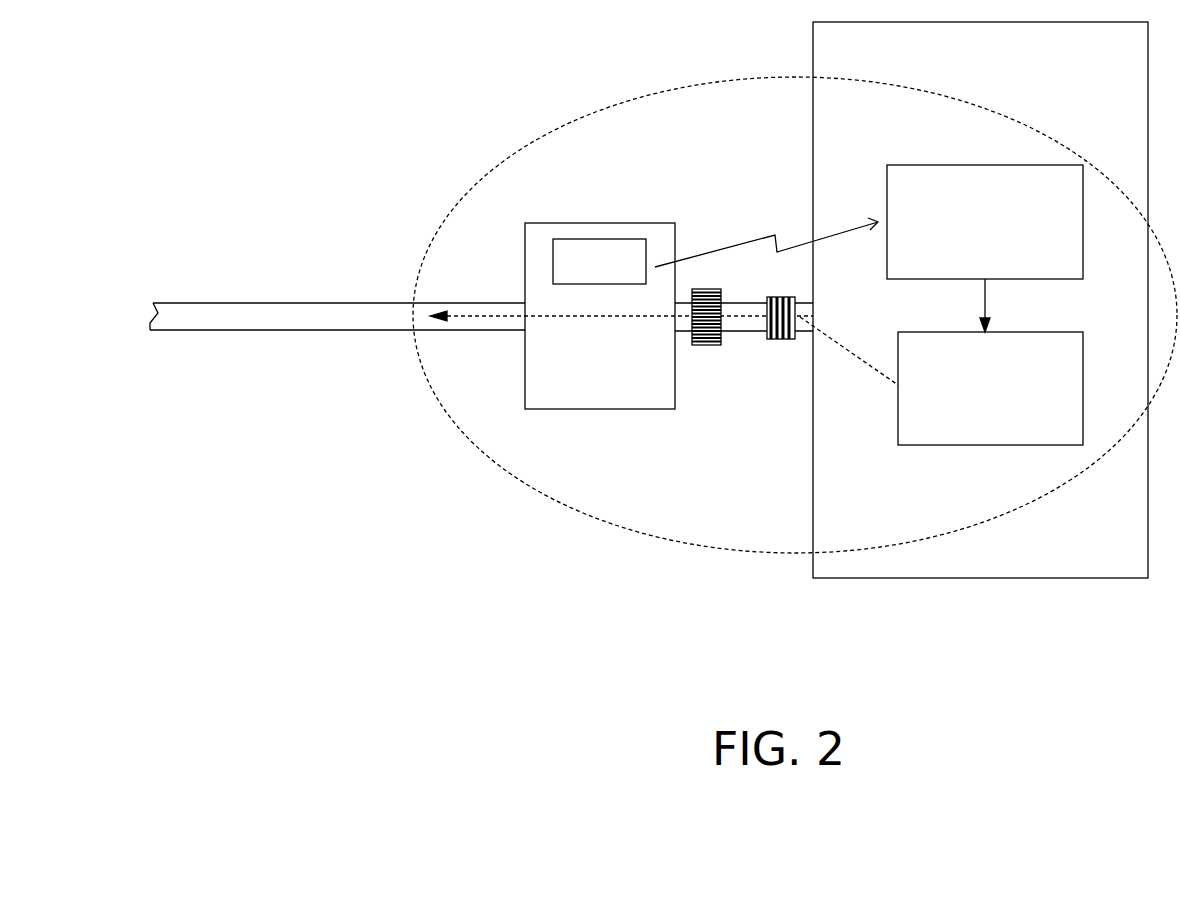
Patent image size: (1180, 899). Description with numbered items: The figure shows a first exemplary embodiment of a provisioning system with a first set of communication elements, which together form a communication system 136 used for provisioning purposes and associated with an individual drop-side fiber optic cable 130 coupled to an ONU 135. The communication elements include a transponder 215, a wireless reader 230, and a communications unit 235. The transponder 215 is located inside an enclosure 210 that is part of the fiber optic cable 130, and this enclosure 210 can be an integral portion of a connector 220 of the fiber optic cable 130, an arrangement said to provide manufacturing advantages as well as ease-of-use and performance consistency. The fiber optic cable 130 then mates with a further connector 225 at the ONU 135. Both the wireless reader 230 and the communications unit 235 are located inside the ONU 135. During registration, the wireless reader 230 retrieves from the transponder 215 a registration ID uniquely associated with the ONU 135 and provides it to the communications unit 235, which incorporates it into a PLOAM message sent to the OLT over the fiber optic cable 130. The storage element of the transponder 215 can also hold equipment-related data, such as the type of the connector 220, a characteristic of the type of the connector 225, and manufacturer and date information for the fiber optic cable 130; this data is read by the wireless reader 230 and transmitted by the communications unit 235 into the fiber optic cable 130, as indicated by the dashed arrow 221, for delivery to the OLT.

The fiber optic cable 130 is at (222, 303).
The ONU 135 is at (1133, 57).
The communication system 136 is at (573, 119).
The enclosure 210 is at (600, 223).
The transponder 215 is at (621, 272).
The connector 220 is at (703, 345).
The dashed arrow 221 is at (497, 315).
The connector 225 is at (780, 339).
The wireless reader 230 is at (1074, 194).
The communications unit 235 is at (1074, 362).